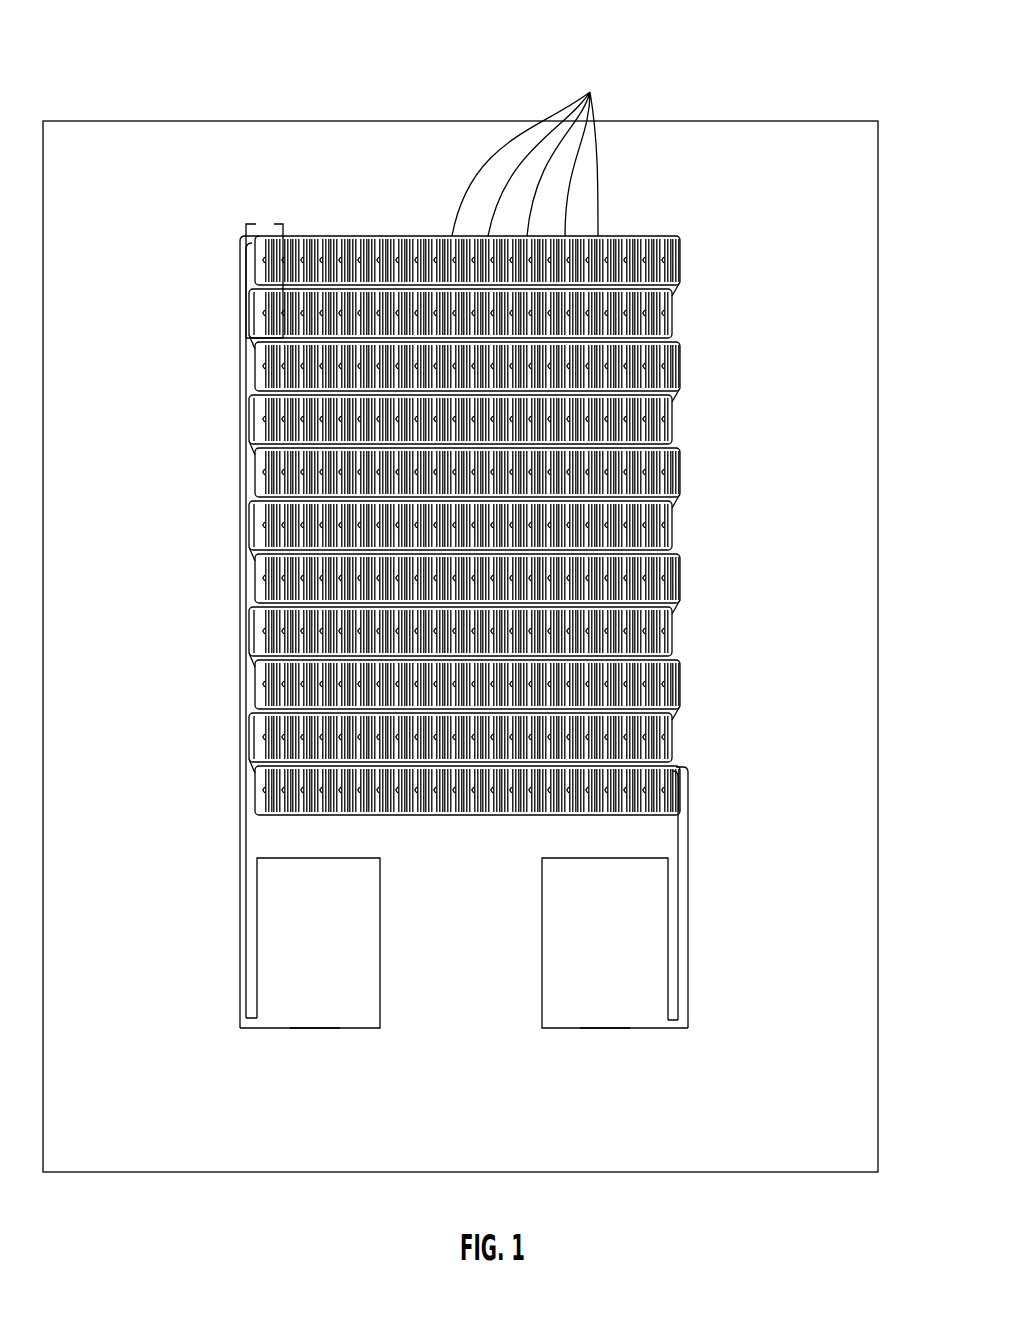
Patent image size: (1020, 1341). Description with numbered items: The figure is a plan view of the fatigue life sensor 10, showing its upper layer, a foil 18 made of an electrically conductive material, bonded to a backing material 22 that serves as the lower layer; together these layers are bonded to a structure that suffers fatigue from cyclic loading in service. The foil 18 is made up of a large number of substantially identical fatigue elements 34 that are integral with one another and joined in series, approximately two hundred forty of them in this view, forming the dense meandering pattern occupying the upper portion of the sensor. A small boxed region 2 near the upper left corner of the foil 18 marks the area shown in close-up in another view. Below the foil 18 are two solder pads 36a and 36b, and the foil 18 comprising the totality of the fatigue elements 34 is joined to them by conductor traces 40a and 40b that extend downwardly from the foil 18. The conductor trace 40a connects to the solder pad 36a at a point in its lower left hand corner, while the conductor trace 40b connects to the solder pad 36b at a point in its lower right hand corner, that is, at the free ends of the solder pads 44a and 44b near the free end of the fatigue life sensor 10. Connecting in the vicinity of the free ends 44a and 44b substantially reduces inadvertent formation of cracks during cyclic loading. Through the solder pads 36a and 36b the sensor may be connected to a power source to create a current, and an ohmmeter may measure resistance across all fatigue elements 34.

The fatigue life sensor 10 is at (460, 587).
The detail region of FIG. 2 is at (264, 269).
The foil 18 is at (682, 358).
The backing material 22 is at (792, 731).
The fatigue elements 34 is at (526, 150).
The solder pad 36a is at (330, 920).
The solder pad 36b is at (630, 920).
The conductor trace 40a is at (243, 946).
The conductor trace 40b is at (673, 990).
The free end of the solder pad 44a is at (313, 1022).
The free end of the solder pad 44b is at (605, 1022).